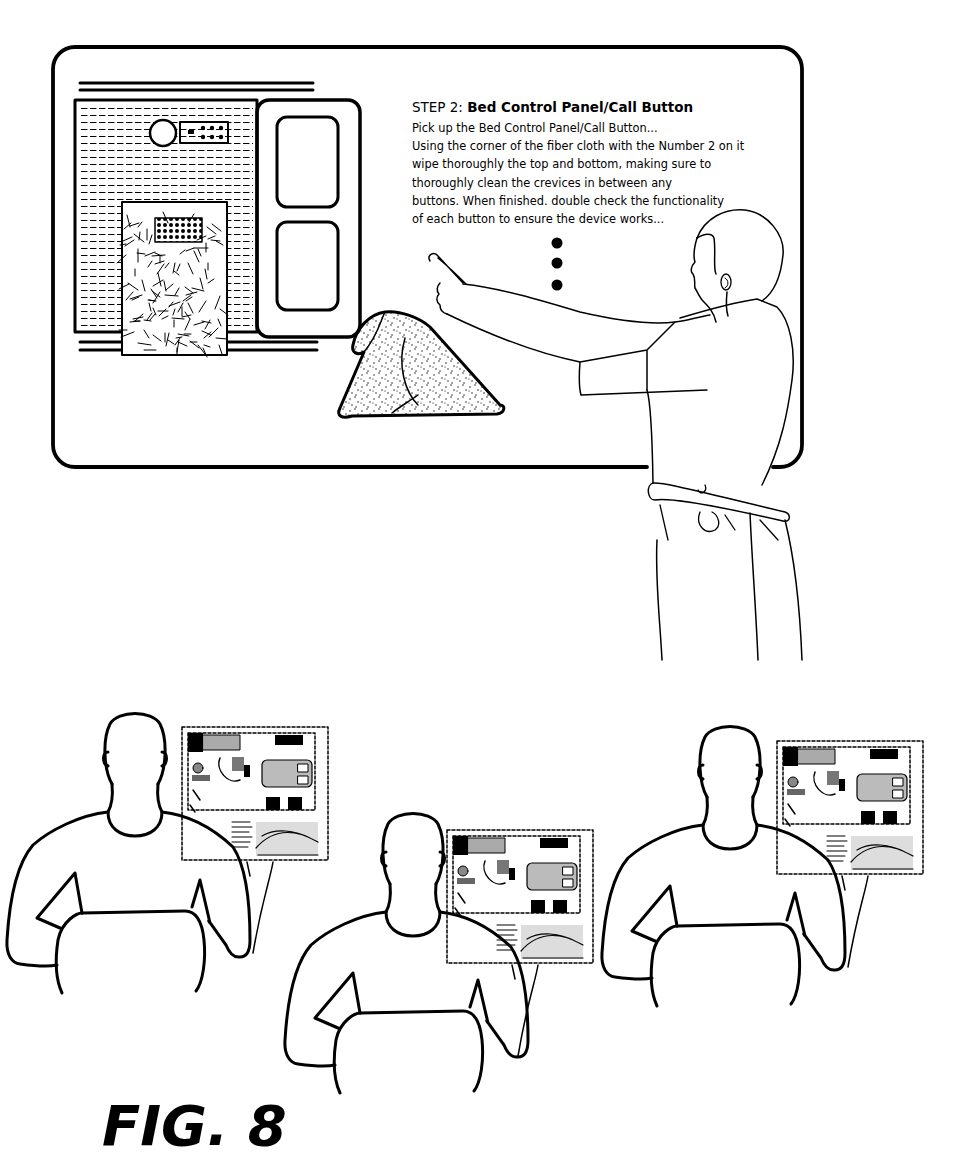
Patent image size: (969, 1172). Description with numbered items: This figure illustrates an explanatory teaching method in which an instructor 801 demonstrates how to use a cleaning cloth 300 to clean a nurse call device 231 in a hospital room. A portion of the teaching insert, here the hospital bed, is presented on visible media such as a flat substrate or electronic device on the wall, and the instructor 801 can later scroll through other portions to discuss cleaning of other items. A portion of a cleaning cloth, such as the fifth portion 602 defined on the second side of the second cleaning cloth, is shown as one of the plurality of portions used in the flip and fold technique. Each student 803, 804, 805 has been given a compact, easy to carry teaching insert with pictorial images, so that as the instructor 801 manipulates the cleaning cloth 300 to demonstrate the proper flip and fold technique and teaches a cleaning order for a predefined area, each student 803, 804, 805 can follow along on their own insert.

The nurse call device 231 is at (200, 123).
The cleaning cloth 300 is at (348, 376).
The fifth portion 602 is at (100, 307).
The instructor 801 is at (757, 412).
The student 803 is at (132, 770).
The student 804 is at (413, 837).
The student 805 is at (718, 758).